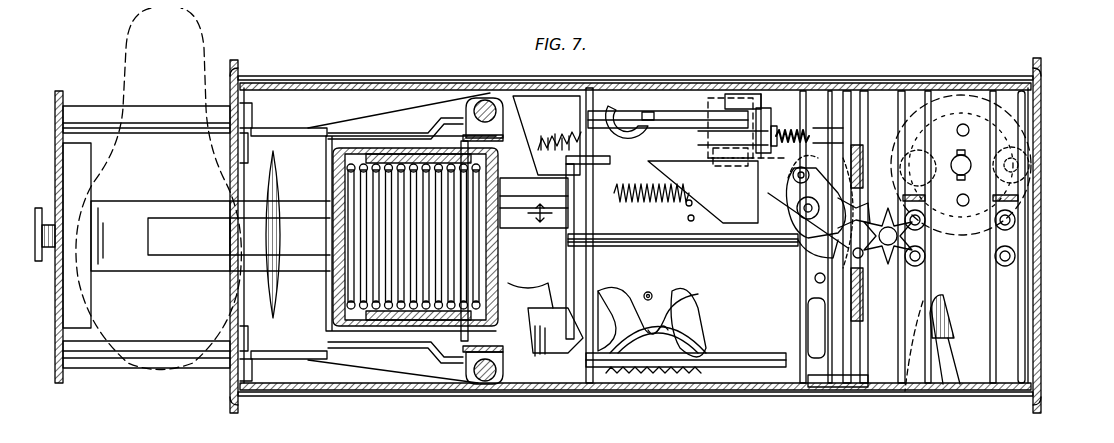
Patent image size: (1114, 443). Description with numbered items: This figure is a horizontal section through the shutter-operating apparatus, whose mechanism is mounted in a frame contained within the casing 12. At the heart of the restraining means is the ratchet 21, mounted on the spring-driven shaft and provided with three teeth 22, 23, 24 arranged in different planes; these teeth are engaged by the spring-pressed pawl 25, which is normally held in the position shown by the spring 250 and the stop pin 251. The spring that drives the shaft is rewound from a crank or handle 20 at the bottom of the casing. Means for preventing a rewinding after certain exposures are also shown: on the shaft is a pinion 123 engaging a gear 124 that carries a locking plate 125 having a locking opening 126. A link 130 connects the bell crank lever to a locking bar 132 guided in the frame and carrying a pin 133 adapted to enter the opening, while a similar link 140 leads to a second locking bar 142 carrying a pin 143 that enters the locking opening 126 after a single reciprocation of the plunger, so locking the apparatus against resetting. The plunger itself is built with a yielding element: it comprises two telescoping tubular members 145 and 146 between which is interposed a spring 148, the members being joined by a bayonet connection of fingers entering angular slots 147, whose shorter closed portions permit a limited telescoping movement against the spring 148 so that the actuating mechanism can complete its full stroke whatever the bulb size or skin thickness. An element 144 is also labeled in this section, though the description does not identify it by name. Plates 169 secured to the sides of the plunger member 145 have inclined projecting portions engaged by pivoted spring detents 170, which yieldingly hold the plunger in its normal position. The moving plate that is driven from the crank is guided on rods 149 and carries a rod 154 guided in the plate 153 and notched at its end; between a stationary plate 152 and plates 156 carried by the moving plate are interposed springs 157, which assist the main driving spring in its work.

The casing 12 is at (1033, 325).
The crank or handle 20 is at (686, 192).
The ratchet 21 is at (845, 196).
The ratchet tooth 22 is at (852, 250).
The ratchet tooth 23 is at (790, 210).
The ratchet tooth 24 is at (848, 178).
The spring-pressed pawl 25 is at (790, 192).
The pinion 123 is at (918, 232).
The gear 124 is at (1015, 180).
The locking plate 125 is at (1010, 150).
The locking opening 126 is at (1000, 130).
The link 130 is at (1010, 190).
The locking bar 132 is at (960, 346).
The pin 133 is at (1010, 165).
The link 140 is at (917, 192).
The locking bar 142 is at (922, 278).
The pin 143 is at (890, 155).
The armature disc 144 is at (322, 250).
The tubular plunger member 145 is at (330, 338).
The tubular plunger member 146 is at (500, 140).
The angular slots 147 is at (462, 350).
The spring 148 is at (345, 275).
The rods 149 is at (597, 98).
The stationary plate 152 is at (755, 265).
The plate 153 is at (568, 255).
The rod 154 is at (655, 230).
The plates 156 is at (748, 88).
The springs 157 is at (772, 85).
The plates 169 is at (372, 125).
The pivoted spring detents 170 is at (345, 125).
The spring 250 is at (760, 172).
The stop pin 251 is at (800, 162).